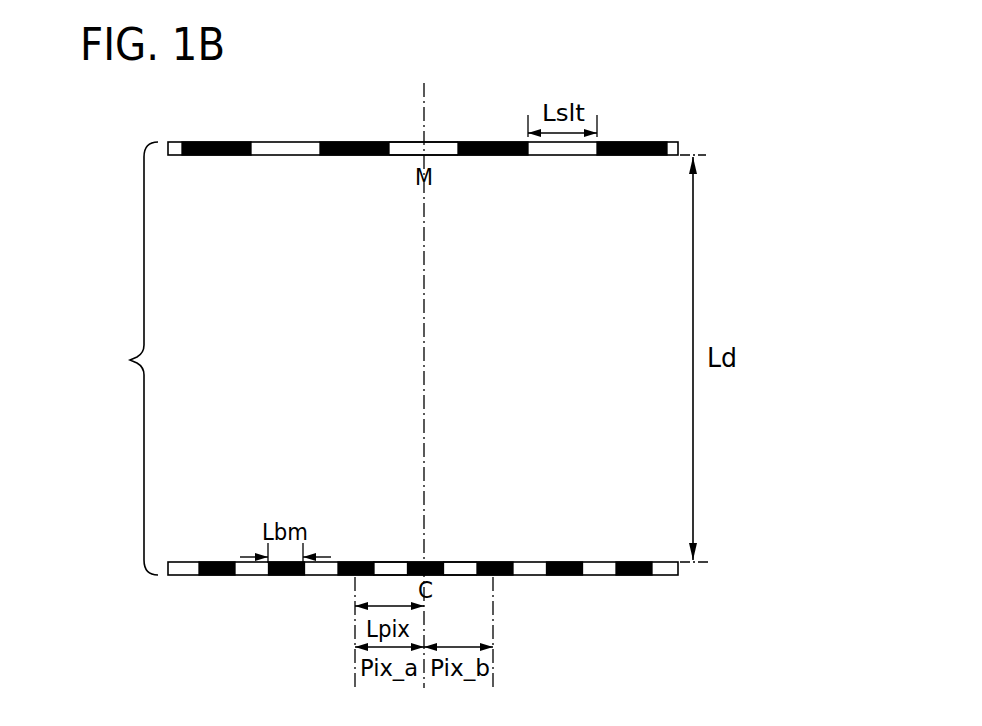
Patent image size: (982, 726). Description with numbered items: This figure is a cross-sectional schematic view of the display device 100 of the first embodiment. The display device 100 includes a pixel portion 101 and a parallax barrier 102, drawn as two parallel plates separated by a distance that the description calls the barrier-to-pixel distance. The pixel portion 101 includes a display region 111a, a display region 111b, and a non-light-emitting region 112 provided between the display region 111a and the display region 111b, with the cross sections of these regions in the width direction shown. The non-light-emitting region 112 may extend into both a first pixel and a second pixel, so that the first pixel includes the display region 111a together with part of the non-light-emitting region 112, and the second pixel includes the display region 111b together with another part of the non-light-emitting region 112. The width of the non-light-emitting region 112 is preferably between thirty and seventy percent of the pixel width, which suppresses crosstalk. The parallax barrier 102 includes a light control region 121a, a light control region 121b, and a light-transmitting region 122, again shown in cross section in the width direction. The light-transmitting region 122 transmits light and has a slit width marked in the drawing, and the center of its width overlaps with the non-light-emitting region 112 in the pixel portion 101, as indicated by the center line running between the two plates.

The display device 100 is at (120, 358).
The pixel portion 101 is at (476, 600).
The parallax barrier 102 is at (482, 187).
The display region 111a is at (390, 567).
The display region 111b is at (465, 568).
The non-light-emitting region 112 is at (463, 568).
The light control region 121a is at (335, 156).
The light control region 121b is at (508, 157).
The light-transmitting region 122 is at (450, 153).